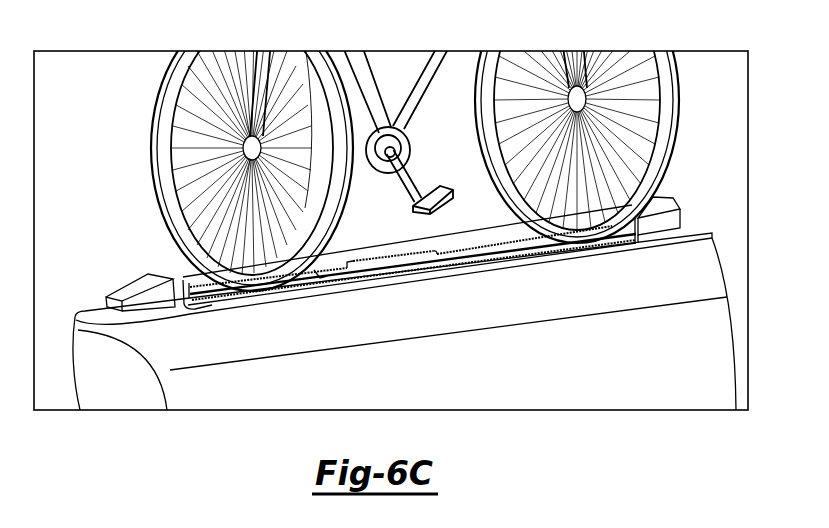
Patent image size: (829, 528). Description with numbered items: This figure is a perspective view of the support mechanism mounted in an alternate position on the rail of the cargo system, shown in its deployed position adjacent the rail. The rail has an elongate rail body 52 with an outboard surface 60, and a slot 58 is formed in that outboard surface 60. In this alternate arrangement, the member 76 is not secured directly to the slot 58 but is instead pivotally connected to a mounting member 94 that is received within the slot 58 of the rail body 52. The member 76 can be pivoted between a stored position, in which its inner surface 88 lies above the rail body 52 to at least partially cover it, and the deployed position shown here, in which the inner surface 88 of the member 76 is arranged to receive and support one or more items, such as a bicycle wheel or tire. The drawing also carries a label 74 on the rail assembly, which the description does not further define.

The rail body 52 is at (488, 240).
The slot 58 is at (187, 294).
The outboard surface 60 is at (380, 247).
The wheel strap 74 is at (385, 275).
The member 76 is at (458, 277).
The inner surface 88 is at (318, 272).
The mounting member 94 is at (183, 283).